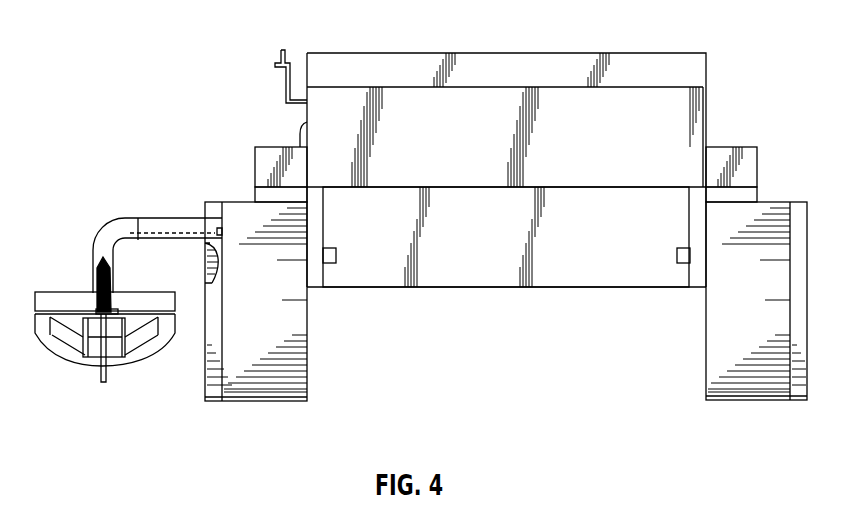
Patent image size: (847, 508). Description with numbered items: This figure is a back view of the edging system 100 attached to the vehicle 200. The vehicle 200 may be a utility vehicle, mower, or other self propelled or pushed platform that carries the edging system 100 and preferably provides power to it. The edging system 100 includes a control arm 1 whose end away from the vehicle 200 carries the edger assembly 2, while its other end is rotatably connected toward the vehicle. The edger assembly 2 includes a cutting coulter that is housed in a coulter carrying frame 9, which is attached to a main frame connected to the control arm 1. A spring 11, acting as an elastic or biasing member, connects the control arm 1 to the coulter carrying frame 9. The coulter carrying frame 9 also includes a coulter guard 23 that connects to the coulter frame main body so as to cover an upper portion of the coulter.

The edging system 100 is at (120, 217).
The vehicle 200 is at (647, 53).
The control arm 1 is at (107, 228).
The spring 11 is at (97, 288).
The coulter carrying frame 9 is at (115, 313).
The coulter guard 23 is at (93, 328).
The edger assembly 2 is at (93, 367).